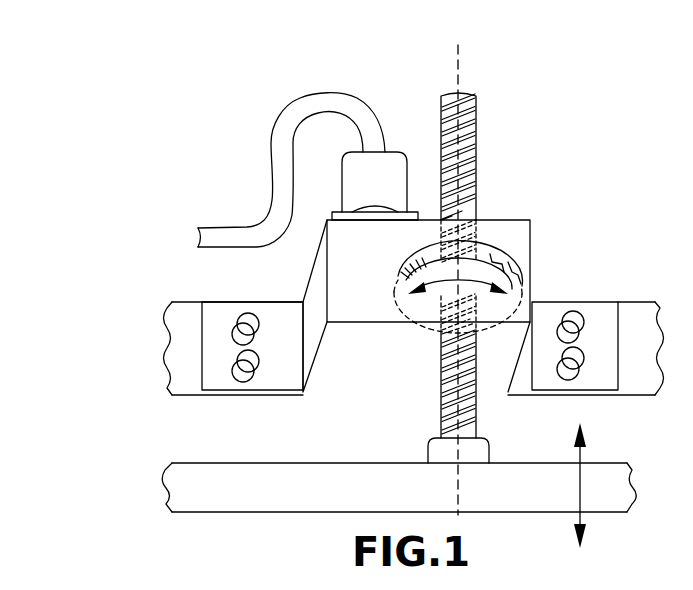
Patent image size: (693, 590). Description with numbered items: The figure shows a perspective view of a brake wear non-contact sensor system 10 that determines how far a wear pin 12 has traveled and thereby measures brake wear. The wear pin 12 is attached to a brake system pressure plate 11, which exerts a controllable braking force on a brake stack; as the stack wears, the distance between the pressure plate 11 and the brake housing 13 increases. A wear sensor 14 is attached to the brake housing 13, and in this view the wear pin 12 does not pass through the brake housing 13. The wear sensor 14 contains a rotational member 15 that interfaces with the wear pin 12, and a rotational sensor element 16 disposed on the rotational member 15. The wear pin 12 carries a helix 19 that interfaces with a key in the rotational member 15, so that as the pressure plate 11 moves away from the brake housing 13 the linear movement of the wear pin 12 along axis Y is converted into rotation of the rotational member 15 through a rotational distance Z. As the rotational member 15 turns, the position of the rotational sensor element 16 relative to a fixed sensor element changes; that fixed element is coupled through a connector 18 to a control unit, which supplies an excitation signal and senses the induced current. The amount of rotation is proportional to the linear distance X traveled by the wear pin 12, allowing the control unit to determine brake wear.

The brake wear non-contact sensor system 10 is at (162, 160).
The brake system pressure plate 11 is at (166, 481).
The wear pin 12 is at (447, 433).
The brake housing 13 is at (166, 346).
The wear sensor 14 is at (275, 272).
The rotational member 15 is at (513, 308).
The rotational sensor element 16 is at (407, 272).
The connector 18 is at (392, 157).
The helix 19 is at (442, 403).